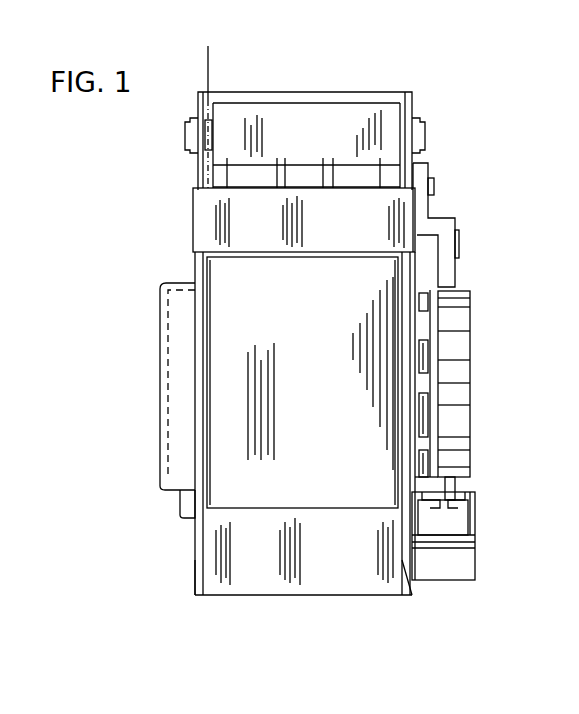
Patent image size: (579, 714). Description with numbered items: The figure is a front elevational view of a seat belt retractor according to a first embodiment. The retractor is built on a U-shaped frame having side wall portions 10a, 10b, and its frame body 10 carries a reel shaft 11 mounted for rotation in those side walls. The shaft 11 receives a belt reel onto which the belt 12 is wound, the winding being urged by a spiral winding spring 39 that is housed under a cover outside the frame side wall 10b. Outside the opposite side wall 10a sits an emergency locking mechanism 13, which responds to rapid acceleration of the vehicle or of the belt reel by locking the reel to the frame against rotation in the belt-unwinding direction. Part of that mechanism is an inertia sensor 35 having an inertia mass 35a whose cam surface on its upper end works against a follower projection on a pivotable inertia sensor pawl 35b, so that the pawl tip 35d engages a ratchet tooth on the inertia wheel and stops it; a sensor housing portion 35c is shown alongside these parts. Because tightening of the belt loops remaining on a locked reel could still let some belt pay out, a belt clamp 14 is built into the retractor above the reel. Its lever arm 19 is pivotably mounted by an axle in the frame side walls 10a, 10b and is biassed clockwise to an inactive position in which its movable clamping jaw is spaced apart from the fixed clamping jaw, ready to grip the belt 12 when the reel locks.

The housing body 10 is at (247, 590).
The side wall portion 10a is at (412, 567).
The side wall portion 10b is at (193, 575).
The reel shaft 11 is at (402, 395).
The belt 12 is at (205, 75).
The emergency locking mechanism 13 is at (477, 334).
The belt clamp 14 is at (445, 162).
The lever arm 19 is at (295, 127).
The inertia sensor 35 is at (485, 553).
The inertia mass 35a is at (445, 530).
The inertia sensor pawl 35b is at (455, 492).
The latch plate 35c is at (470, 540).
The pawl tip 35d is at (455, 483).
The spiral winding spring 39 is at (180, 490).